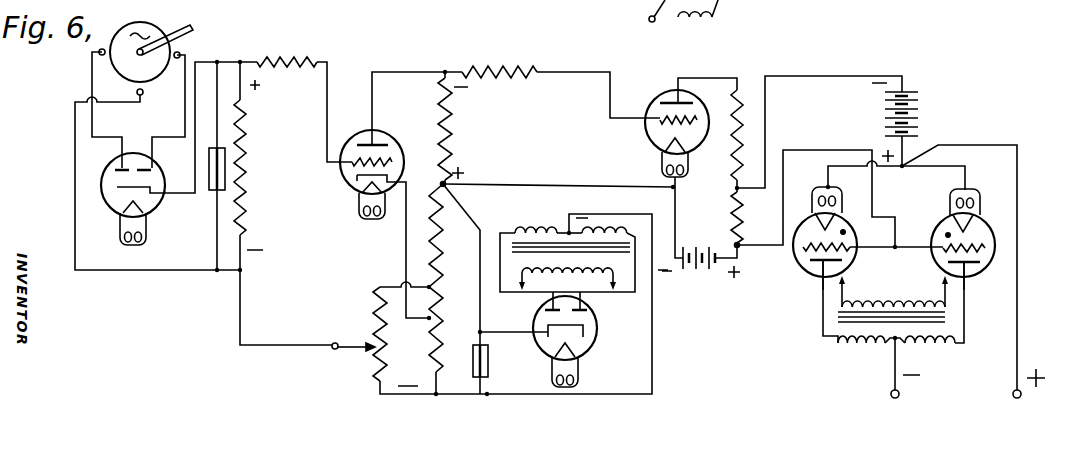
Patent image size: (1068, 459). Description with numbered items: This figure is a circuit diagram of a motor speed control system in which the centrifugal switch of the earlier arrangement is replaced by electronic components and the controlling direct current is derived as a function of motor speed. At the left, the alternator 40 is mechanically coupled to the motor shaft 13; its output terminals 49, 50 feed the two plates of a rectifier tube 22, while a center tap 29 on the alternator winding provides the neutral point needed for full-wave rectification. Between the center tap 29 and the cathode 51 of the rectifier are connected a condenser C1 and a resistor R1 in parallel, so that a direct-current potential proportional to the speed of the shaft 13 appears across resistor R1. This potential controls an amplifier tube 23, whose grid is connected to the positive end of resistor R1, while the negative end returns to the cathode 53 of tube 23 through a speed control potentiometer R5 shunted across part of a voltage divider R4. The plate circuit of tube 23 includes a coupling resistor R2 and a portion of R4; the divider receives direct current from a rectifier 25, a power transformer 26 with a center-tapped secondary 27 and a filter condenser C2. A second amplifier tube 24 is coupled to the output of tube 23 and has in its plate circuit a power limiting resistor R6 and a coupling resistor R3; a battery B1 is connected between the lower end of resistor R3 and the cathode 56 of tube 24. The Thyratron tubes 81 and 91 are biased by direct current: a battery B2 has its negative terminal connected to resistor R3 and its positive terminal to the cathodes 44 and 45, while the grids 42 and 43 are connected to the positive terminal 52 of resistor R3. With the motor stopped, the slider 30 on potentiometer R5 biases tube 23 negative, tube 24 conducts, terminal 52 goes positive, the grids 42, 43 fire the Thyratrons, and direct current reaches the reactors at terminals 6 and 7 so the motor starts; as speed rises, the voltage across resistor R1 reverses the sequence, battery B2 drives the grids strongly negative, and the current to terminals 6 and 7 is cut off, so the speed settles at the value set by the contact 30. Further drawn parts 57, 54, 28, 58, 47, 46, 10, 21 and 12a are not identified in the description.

The motor shaft 13 is at (184, 28).
The alternator 40 is at (191, 43).
The output terminal 49 is at (84, 56).
The output terminal 50 is at (174, 60).
The center tap 29 is at (142, 96).
The rectifier tube 22 is at (108, 164).
The cathode 51 is at (151, 211).
The condenser C1 is at (211, 185).
The resistor R1 is at (247, 172).
The amplifier tube 23 is at (364, 135).
The plate 57 is at (383, 139).
The grid 54 is at (353, 165).
The cathode 53 is at (348, 189).
The junction 28 is at (429, 186).
The coupling resistor R2 is at (446, 138).
The voltage divider R4 is at (448, 281).
The speed control potentiometer R5 is at (370, 330).
The slider 30 is at (345, 356).
The filter condenser C2 is at (488, 362).
The center-tapped secondary 27 is at (545, 230).
The power transformer 26 is at (635, 237).
The rectifier 25 is at (600, 328).
The second amplifier tube 24 is at (667, 94).
The grid 58 is at (660, 121).
The cathode 56 is at (660, 147).
The power limiting resistor R6 is at (737, 128).
The coupling resistor R3 is at (733, 233).
The battery B1 is at (694, 276).
The terminal 52 is at (739, 247).
The bias battery B2 is at (913, 128).
The grid 43 is at (803, 254).
The cathode 45 is at (837, 219).
The Thyratron tube 91 is at (846, 262).
The plate lead 47 is at (818, 264).
The grid 42 is at (984, 252).
The cathode 44 is at (974, 225).
The Thyratron tube 81 is at (947, 264).
The plate lead 46 is at (970, 276).
The transformer 10 is at (947, 322).
The transformer winding 21 is at (863, 347).
The terminal 6 is at (893, 398).
The terminal 7 is at (1015, 400).
The terminal 12a is at (648, 20).